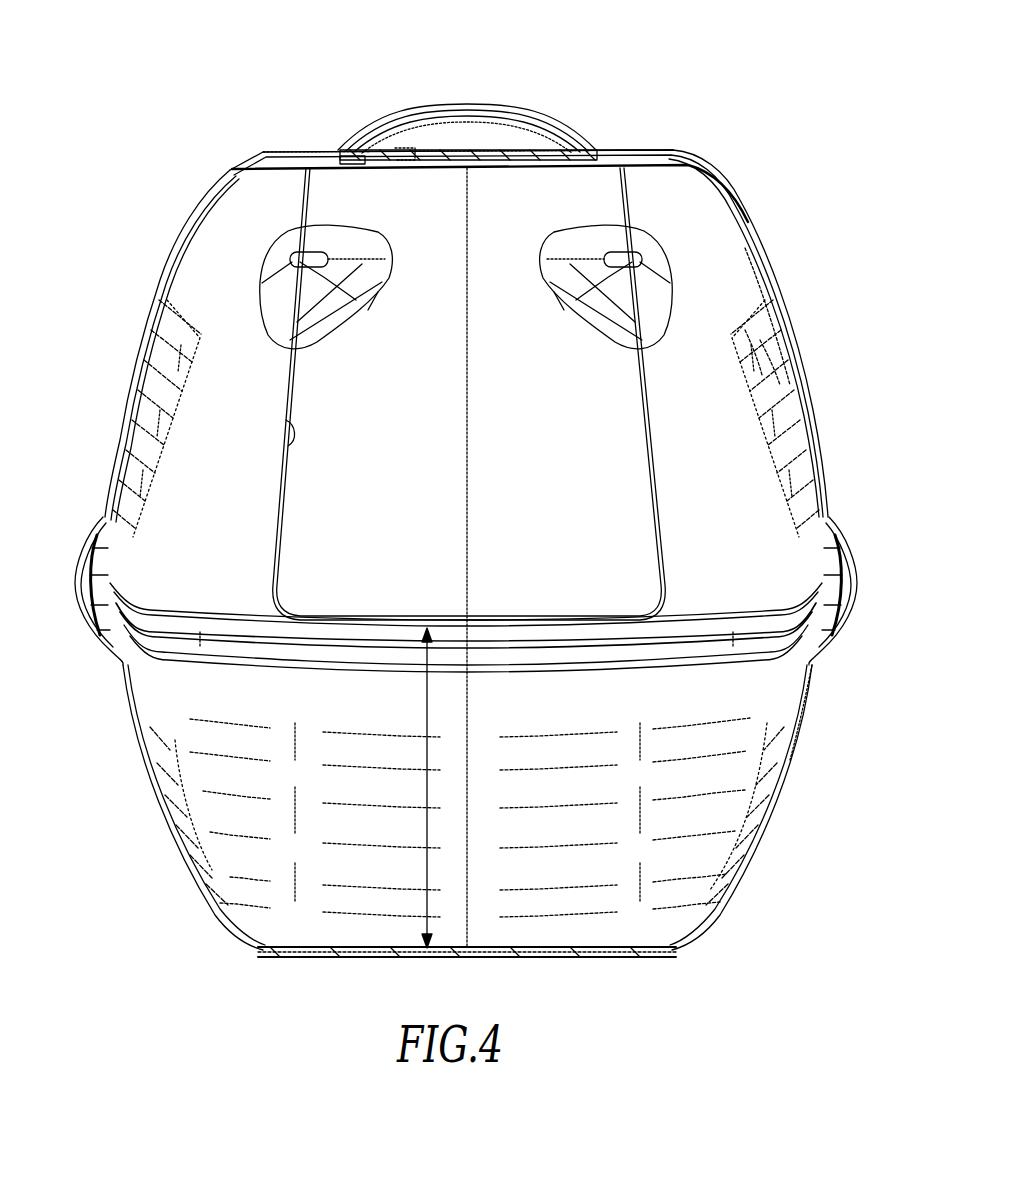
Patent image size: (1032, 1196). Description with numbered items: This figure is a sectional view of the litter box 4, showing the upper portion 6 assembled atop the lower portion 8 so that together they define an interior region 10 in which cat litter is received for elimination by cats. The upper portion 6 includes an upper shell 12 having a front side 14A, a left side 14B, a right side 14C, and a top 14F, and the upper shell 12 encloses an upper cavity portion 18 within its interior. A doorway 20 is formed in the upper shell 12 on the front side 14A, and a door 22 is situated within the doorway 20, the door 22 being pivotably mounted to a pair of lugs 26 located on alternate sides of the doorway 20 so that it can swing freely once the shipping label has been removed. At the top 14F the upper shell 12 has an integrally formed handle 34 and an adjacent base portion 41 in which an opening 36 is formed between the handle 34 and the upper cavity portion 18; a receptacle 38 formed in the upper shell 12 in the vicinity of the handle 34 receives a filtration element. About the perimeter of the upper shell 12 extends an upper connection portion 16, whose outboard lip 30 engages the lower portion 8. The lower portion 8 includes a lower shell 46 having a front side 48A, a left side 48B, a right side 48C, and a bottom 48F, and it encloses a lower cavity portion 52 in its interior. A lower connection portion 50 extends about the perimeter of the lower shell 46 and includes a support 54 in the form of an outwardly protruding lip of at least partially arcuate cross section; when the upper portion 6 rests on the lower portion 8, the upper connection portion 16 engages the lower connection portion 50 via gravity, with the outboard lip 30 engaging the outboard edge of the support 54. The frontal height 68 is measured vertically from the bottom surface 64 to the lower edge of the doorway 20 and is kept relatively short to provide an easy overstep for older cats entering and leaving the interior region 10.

The litter box 4 is at (692, 62).
The upper portion 6 is at (724, 170).
The lower portion 8 is at (471, 837).
The interior region 10 is at (735, 250).
The upper shell 12 is at (682, 148).
The front side 14A is at (745, 250).
The left side 14B is at (812, 402).
The right side 14C is at (160, 292).
The top 14F is at (620, 148).
The upper connection portion 16 is at (860, 557).
The upper cavity portion 18 is at (768, 366).
The doorway 20 is at (290, 434).
The door 22 is at (285, 370).
The lugs 26 is at (294, 250).
The outboard lip 30 is at (79, 568).
The handle 34 is at (456, 108).
The opening 36 is at (350, 166).
The receptacle 38 is at (418, 150).
The base portion 41 is at (537, 152).
The lower shell 46 is at (748, 912).
The front side 48A is at (765, 752).
The left side 48B is at (812, 708).
The right side 48C is at (126, 718).
The bottom 48F is at (566, 942).
The lower connection portion 50 is at (862, 598).
The lower cavity portion 52 is at (728, 815).
The support 54 is at (80, 586).
The bottom surface 64 is at (330, 952).
The frontal height 68 is at (425, 698).